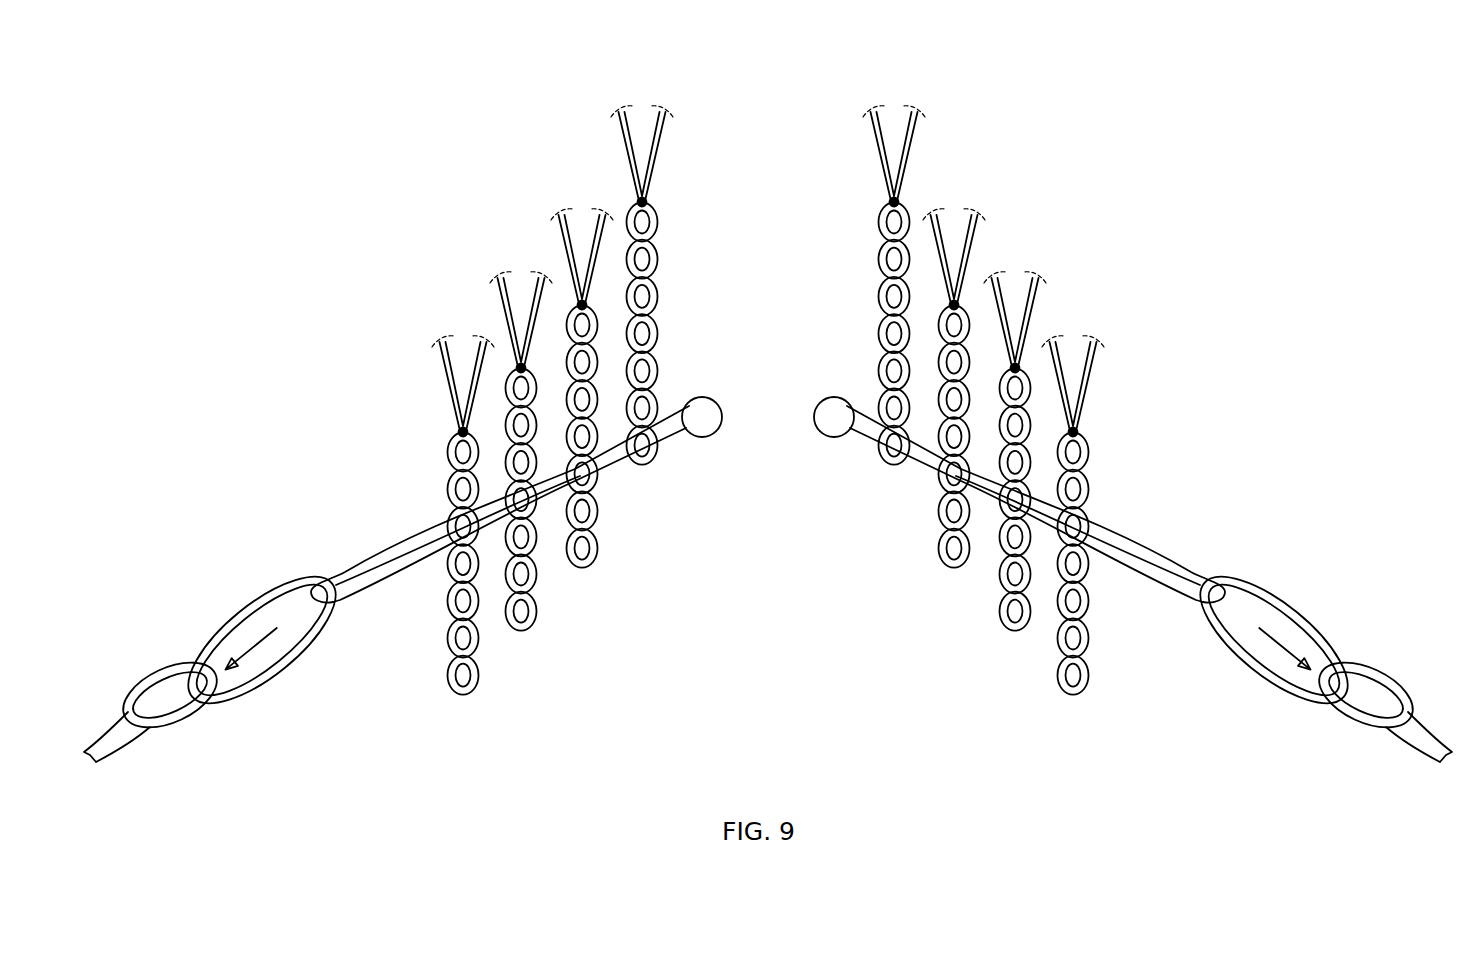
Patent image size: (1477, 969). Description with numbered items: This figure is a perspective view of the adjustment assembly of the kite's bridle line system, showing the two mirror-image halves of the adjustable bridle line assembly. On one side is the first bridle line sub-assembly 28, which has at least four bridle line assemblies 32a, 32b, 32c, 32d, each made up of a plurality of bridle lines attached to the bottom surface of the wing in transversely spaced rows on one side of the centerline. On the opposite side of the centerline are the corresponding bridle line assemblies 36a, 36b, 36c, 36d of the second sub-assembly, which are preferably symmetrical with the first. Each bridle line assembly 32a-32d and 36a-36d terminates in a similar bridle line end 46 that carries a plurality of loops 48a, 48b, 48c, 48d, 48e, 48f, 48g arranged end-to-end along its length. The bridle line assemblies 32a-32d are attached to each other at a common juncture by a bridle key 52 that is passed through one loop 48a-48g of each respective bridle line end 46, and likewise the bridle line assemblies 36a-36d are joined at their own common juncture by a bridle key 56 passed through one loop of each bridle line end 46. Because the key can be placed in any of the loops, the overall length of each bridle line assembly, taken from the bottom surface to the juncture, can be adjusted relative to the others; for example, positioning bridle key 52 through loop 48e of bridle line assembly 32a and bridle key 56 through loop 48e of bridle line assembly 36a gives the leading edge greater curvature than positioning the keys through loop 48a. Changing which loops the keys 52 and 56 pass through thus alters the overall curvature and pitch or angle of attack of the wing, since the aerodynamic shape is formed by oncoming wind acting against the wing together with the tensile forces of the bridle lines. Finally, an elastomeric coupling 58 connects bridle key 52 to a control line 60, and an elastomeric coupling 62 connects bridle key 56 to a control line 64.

The first bridle line sub-assembly 28 is at (357, 140).
The bridle line assembly 32a is at (442, 370).
The bridle line assembly 32b is at (502, 305).
The bridle line assembly 32c is at (562, 240).
The bridle line assembly 32d is at (620, 141).
The bridle line assembly 36a is at (1094, 370).
The bridle line assembly 36b is at (1034, 305).
The bridle line assembly 36c is at (974, 240).
The bridle line assembly 36d is at (914, 141).
The bridle line end 46 is at (643, 465).
The loop 48a is at (655, 455).
The loop 48b is at (658, 406).
The loop 48c is at (658, 370).
The loop 48d is at (658, 333).
The loop 48e is at (658, 296).
The loop 48f is at (658, 259).
The loop 48g is at (658, 222).
The bridle key 52 is at (370, 550).
The bridle key 56 is at (1166, 550).
The elastomeric coupling 58 is at (258, 592).
The control line 60 is at (130, 678).
The elastomeric coupling 62 is at (1278, 592).
The control line 64 is at (1406, 678).